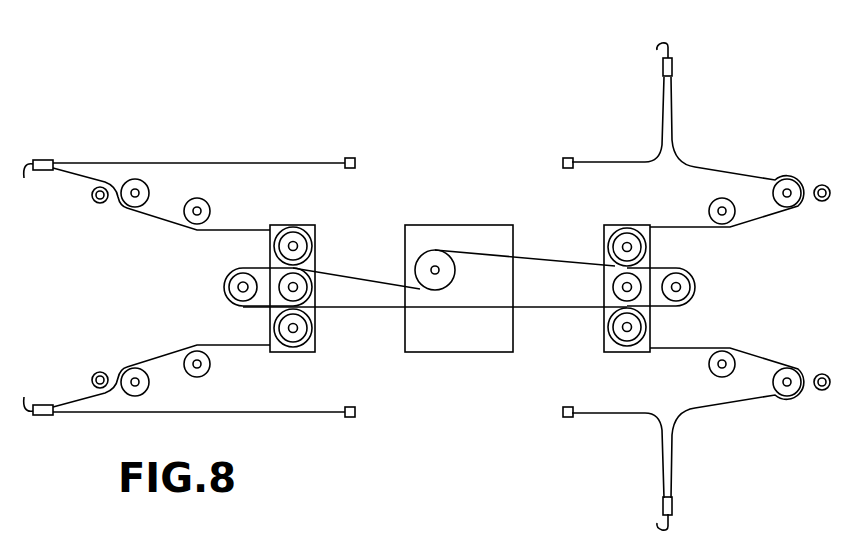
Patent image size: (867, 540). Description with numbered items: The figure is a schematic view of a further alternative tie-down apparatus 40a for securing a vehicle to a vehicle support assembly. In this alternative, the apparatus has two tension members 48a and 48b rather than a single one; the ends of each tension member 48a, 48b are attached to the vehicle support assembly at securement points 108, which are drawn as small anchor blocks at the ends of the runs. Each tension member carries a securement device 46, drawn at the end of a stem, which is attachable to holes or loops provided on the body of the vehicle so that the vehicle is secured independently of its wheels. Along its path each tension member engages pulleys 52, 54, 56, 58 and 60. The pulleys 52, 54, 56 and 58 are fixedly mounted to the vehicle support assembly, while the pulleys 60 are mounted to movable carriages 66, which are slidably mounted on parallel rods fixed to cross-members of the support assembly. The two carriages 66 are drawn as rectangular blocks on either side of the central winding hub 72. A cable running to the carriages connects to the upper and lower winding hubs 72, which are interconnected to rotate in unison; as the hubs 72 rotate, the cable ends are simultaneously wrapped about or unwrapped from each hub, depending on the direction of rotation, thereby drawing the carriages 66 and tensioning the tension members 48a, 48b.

The tie-down apparatus 40a is at (384, 126).
The securement device 46 is at (672, 68).
The tension member 48a is at (237, 163).
The tension member 48b is at (619, 160).
The pulley 52 is at (822, 183).
The pulley 54 is at (768, 180).
The pulley 56 is at (710, 205).
The pulley 58 is at (695, 287).
The pulley 60 is at (651, 248).
The movable carriage 66 is at (315, 335).
The winding hub 72 is at (433, 249).
The securement point 108 is at (350, 168).